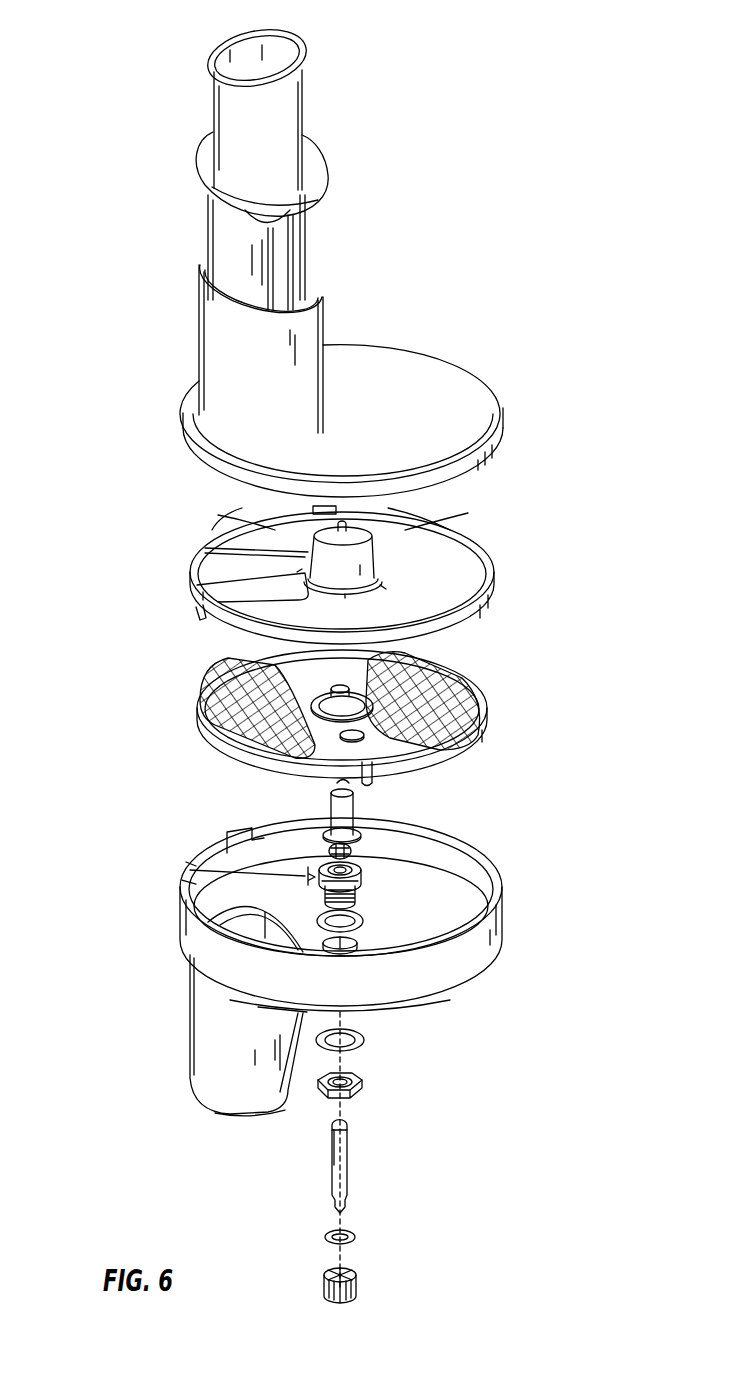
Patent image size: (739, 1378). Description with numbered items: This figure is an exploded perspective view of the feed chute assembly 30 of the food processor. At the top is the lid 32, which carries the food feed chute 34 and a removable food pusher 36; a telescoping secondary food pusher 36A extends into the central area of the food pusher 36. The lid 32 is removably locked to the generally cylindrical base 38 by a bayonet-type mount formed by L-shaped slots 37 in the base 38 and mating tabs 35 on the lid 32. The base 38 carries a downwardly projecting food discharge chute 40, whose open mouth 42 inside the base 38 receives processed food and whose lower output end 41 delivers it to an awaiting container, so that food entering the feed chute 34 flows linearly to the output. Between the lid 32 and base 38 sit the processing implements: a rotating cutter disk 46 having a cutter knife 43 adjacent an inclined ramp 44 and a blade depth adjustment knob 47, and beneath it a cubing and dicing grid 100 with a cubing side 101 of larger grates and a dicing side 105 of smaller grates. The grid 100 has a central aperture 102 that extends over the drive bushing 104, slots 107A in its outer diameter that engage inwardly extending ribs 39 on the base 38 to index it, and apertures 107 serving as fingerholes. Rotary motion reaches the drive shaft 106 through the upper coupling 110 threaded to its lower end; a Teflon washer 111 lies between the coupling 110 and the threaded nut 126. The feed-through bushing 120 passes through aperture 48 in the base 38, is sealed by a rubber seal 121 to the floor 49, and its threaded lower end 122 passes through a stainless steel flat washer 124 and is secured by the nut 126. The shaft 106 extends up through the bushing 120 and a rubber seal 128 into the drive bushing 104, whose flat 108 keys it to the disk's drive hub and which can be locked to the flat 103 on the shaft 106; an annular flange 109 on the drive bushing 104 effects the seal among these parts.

The feed chute assembly 30 is at (61, 587).
The lid 32 is at (437, 352).
The food feed chute 34 is at (325, 322).
The mating tabs 35 is at (263, 517).
The removable food pusher 36 is at (307, 180).
The telescoping secondary food pusher 36A is at (295, 42).
The L-shaped slots 37 is at (237, 848).
The base 38 is at (503, 898).
The inwardly extending ribs 39 is at (190, 882).
The food discharge chute 40 is at (190, 1055).
The lower output end 41 is at (250, 1118).
The open mouth 42 is at (247, 937).
The cutter knife 43 is at (200, 610).
The inclined ramp 44 is at (217, 583).
The rotating cutter disk 46 is at (496, 560).
The blade depth adjustment knob 47 is at (365, 528).
The aperture 48 is at (360, 918).
The floor 49 is at (418, 949).
The cubing and dicing grid 100 is at (485, 708).
The cubing side 101 is at (200, 718).
The central aperture 102 is at (450, 657).
The flat 103 is at (348, 1137).
The drive bushing 104 is at (356, 808).
The dicing side 105 is at (395, 720).
The drive shaft 106 is at (348, 1175).
The apertures 107 is at (333, 685).
The slots 107A is at (376, 774).
The flat 108 is at (343, 784).
The annular flange 109 is at (188, 868).
The upper coupling 110 is at (358, 1283).
The Teflon washer 111 is at (352, 1235).
The feed-through bushing 120 is at (358, 868).
The rubber seal 121 is at (190, 928).
The threaded lower end 122 is at (322, 889).
The stainless steel flat washer 124 is at (362, 1034).
The threaded nut 126 is at (364, 1083).
The rubber seal 128 is at (350, 848).